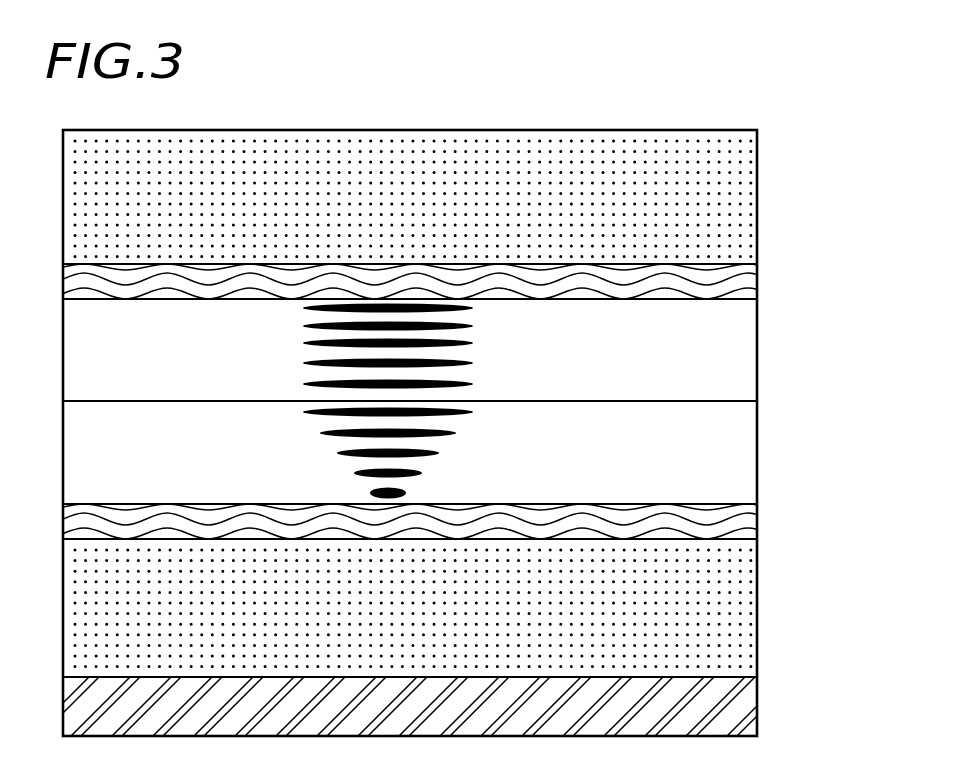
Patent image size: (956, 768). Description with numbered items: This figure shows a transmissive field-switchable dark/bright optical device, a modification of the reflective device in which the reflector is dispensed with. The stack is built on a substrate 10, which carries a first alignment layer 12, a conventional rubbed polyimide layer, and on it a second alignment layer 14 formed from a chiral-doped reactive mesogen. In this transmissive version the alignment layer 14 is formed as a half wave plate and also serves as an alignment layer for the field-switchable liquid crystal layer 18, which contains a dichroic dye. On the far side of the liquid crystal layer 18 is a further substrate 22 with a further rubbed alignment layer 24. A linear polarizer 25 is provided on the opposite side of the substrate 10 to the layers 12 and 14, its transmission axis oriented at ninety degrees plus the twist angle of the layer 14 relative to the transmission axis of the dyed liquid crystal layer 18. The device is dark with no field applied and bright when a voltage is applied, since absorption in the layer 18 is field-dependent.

The substrate 10 is at (742, 594).
The first alignment layer 12 is at (746, 530).
The second alignment layer 14 is at (730, 461).
The field-switchable liquid crystal layer 18 is at (738, 348).
The further substrate 22 is at (730, 193).
The further rubbed alignment layer 24 is at (738, 278).
The linear polarizer 25 is at (742, 710).